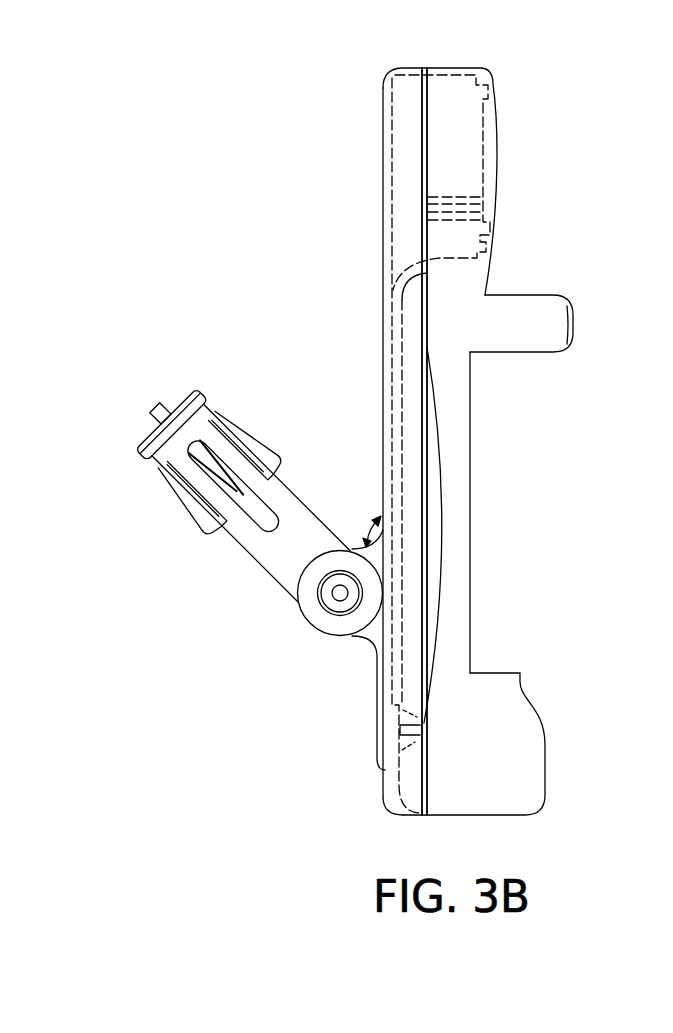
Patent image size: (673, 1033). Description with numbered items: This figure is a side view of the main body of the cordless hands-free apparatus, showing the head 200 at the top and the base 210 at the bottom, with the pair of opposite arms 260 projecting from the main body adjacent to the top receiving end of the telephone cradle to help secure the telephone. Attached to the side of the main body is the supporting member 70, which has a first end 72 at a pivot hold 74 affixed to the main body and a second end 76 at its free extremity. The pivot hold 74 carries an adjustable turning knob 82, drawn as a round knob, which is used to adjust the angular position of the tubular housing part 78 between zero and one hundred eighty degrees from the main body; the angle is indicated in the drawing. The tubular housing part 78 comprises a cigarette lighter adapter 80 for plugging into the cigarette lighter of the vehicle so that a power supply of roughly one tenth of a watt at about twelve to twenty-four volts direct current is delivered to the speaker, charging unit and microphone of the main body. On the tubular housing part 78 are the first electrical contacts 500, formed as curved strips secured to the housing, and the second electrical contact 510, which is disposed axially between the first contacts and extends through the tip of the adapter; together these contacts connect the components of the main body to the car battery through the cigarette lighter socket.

The supporting member 70 is at (249, 577).
The first end 72 is at (363, 645).
The pivot hold 74 is at (348, 545).
The second end 76 is at (137, 453).
The tubular housing part 78 is at (383, 350).
The cigarette lighter adapter 80 is at (197, 392).
The adjustable turning knob 82 is at (303, 627).
The head 200 is at (471, 427).
The base 210 is at (545, 740).
The pair of opposite arms 260 is at (562, 355).
The first electrical contacts 500 is at (183, 500).
The second electrical contact 510 is at (152, 400).